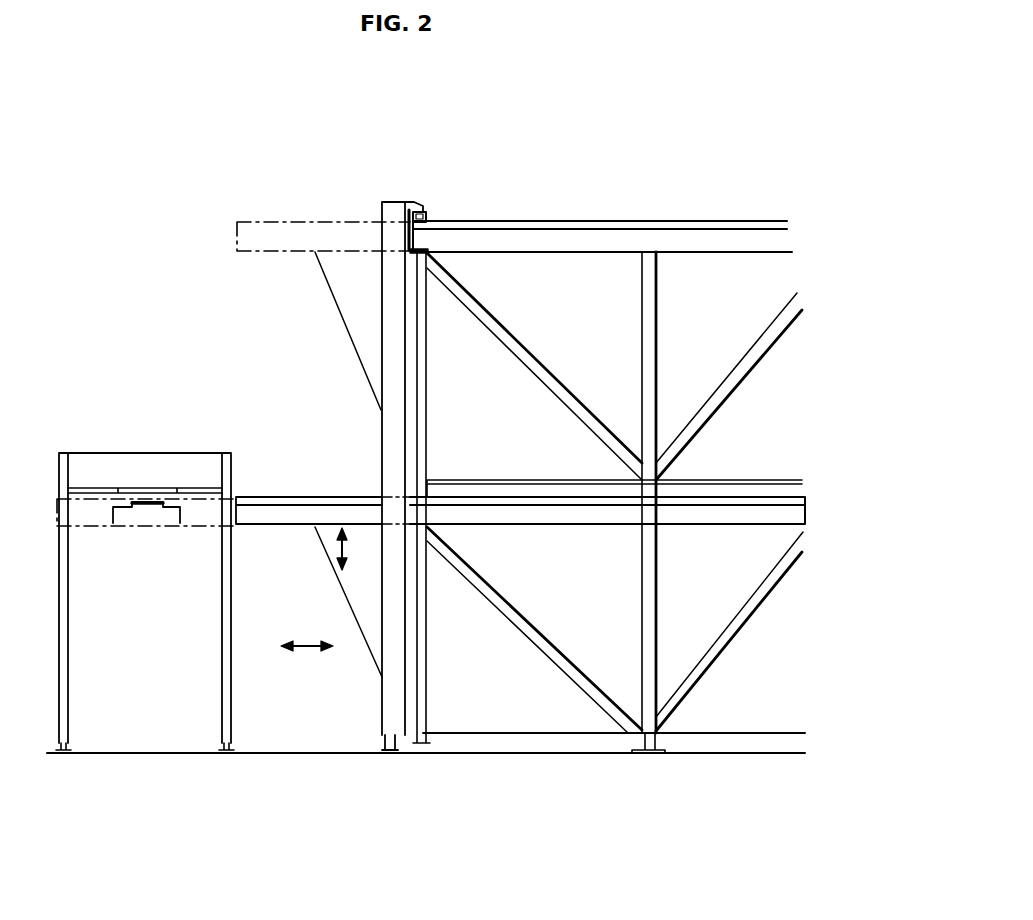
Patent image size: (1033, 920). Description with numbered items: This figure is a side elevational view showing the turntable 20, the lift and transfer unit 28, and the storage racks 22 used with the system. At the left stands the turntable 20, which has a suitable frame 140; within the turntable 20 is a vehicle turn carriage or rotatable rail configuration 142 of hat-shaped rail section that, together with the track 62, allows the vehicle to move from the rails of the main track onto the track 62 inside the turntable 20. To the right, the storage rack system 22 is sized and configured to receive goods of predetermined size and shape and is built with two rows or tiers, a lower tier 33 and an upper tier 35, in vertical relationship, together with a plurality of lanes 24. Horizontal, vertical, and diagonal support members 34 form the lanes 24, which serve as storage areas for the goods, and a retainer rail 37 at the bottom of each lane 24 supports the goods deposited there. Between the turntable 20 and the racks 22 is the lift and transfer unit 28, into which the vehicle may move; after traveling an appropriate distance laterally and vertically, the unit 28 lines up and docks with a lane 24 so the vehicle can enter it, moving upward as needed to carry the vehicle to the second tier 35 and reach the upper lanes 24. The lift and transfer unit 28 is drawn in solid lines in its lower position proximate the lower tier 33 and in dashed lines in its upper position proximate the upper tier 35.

The turntable 20 is at (86, 448).
The storage racks 22 is at (580, 821).
The lanes 24 is at (573, 266).
The lift and transfer unit 28 is at (277, 231).
The lower tier 33 is at (518, 757).
The support members 34 is at (498, 246).
The upper tier 35 is at (492, 211).
The retainer rail 37 is at (506, 487).
The track 62 is at (113, 512).
The frame 140 is at (226, 456).
The vehicle turn carriage 142 is at (113, 512).